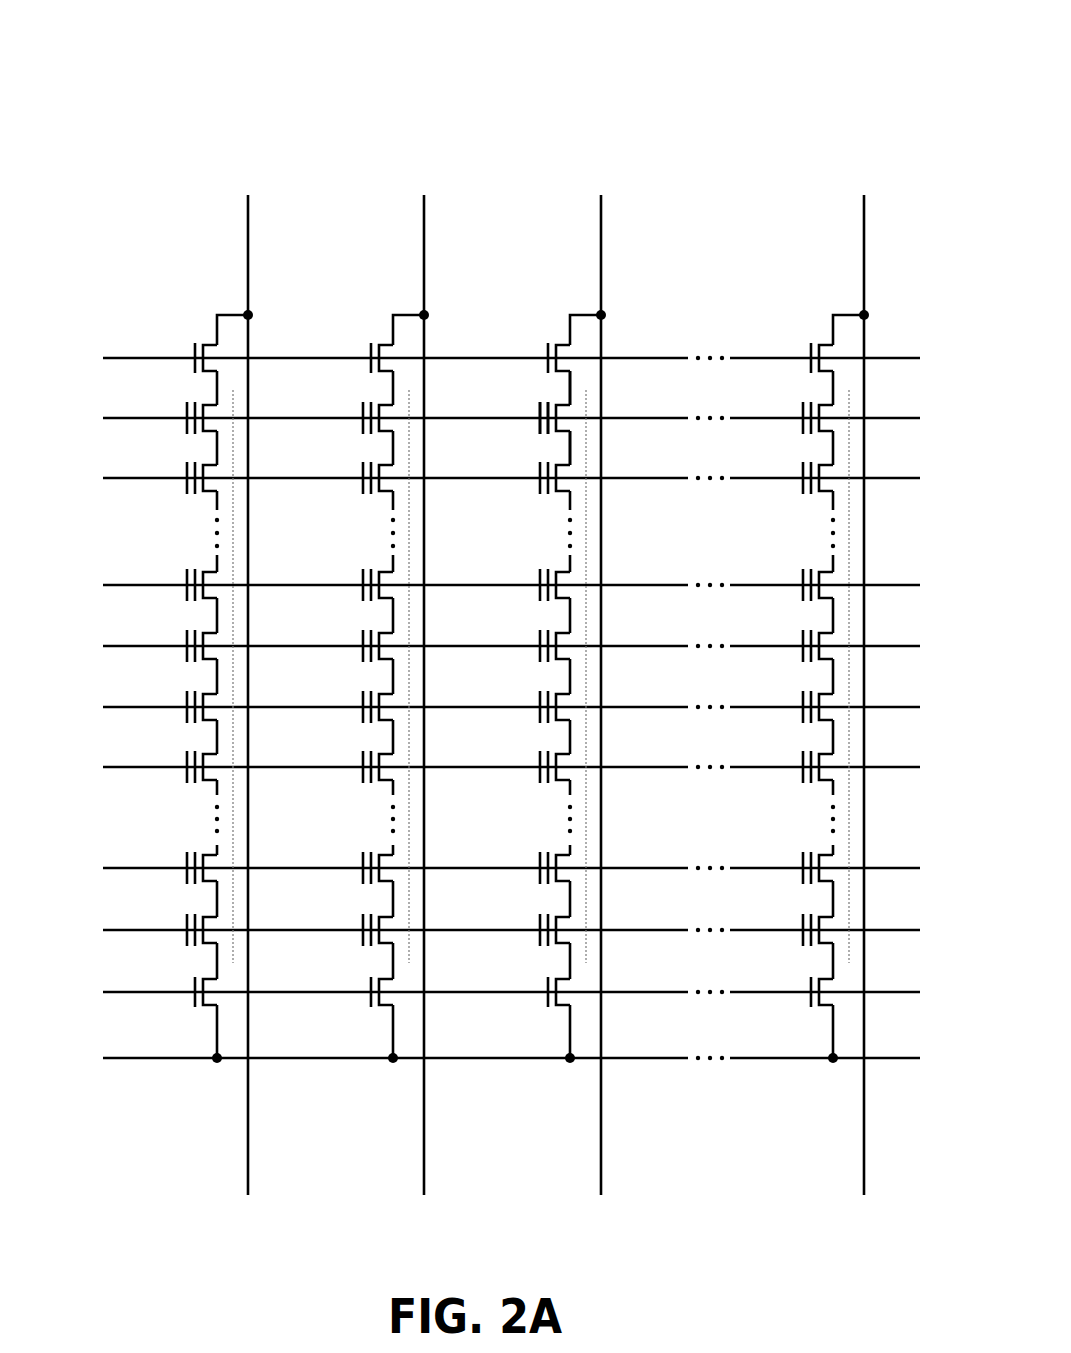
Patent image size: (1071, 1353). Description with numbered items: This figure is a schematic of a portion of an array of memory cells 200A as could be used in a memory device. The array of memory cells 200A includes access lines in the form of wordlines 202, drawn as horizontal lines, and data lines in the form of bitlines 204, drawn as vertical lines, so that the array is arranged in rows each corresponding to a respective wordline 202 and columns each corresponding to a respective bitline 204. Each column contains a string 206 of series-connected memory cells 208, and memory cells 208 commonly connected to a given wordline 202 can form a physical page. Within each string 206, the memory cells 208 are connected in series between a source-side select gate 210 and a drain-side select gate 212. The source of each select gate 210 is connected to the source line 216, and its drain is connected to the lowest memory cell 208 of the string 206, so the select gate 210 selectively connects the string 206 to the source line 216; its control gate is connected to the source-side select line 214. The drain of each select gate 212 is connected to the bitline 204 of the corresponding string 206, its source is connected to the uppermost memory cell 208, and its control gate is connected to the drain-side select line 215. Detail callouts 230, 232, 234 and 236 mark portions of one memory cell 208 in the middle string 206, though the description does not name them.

The array of memory cells 200A is at (111, 52).
The wordline 202 is at (150, 412).
The bitline 204 is at (249, 237).
The string 206 is at (233, 675).
The memory cell 208 is at (196, 446).
The select gate 210 is at (205, 1012).
The select gate 212 is at (205, 342).
The select line 214 is at (757, 990).
The select line 215 is at (768, 355).
The source line 216 is at (175, 1062).
The source of memory cell 230 is at (576, 446).
The drain of memory cell 232 is at (574, 395).
The control gate 234 is at (542, 404).
The floating gate / charge storage structure 236 is at (536, 432).